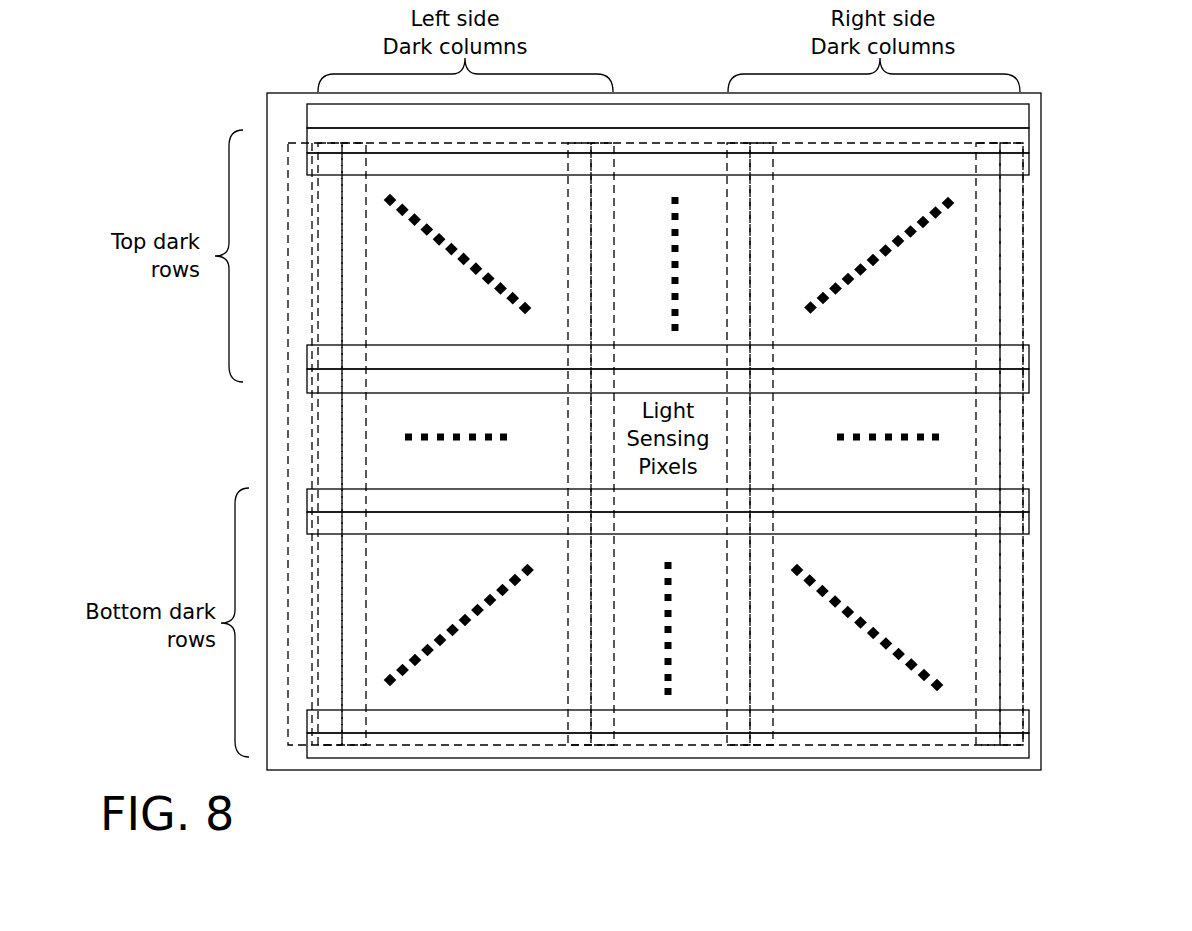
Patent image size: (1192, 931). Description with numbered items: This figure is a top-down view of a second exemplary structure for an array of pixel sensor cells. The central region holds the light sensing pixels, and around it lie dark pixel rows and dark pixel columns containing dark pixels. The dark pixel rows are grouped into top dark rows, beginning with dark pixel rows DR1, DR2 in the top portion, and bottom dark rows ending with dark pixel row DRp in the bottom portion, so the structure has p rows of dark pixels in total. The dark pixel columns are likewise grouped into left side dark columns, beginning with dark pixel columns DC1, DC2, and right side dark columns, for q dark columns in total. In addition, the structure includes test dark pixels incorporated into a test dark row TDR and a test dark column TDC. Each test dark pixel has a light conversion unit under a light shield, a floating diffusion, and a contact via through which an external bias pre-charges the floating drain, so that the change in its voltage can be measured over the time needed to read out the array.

The test dark column TDC is at (298, 455).
The dark pixel column DC1 is at (328, 722).
The dark pixel column DC2 is at (353, 722).
The test dark row TDR is at (1029, 122).
The dark pixel row DR1 is at (1029, 146).
The dark pixel row DR2 is at (1029, 169).
The dark pixel row DRp is at (1029, 757).